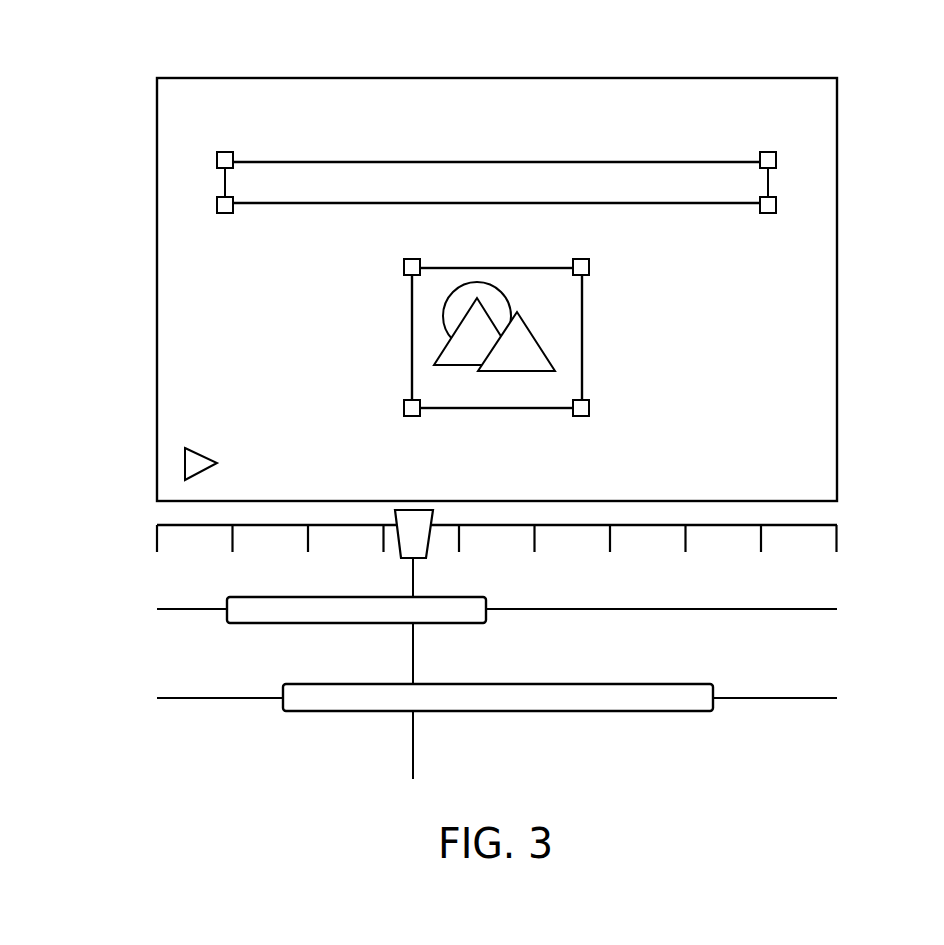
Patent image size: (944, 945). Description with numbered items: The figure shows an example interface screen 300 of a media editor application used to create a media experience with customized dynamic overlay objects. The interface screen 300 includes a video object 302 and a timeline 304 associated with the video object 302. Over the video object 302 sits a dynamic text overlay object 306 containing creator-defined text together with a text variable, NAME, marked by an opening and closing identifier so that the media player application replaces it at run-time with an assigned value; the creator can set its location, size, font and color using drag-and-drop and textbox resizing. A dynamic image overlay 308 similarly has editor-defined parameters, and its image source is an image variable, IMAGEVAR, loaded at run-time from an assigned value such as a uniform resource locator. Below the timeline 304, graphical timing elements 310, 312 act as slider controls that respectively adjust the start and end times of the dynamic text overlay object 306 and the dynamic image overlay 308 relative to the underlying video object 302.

The interface screen 300 is at (135, 40).
The video object 302 is at (157, 270).
The timeline 304 is at (157, 545).
The dynamic text overlay object 306 is at (216, 182).
The dynamic image overlay 308 is at (412, 338).
The graphical timing element 310 is at (157, 609).
The graphical timing element 312 is at (157, 698).